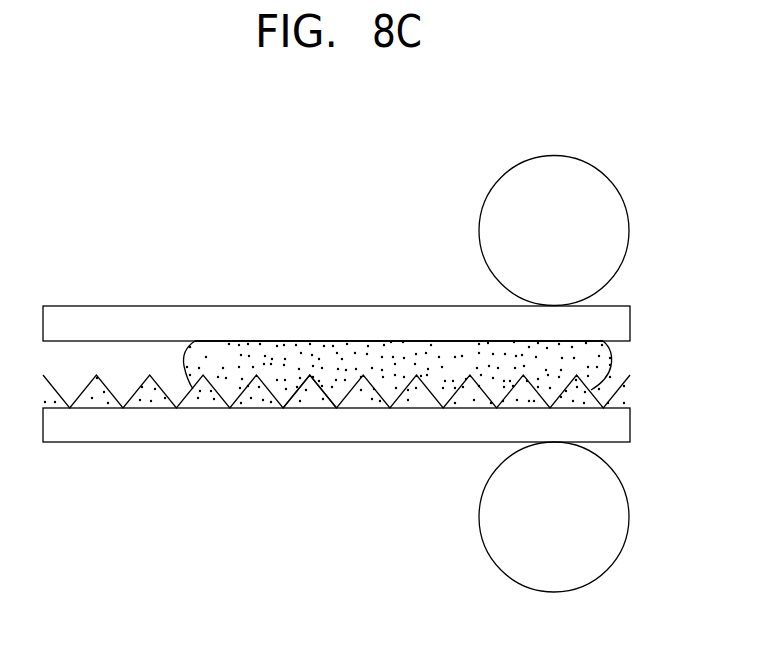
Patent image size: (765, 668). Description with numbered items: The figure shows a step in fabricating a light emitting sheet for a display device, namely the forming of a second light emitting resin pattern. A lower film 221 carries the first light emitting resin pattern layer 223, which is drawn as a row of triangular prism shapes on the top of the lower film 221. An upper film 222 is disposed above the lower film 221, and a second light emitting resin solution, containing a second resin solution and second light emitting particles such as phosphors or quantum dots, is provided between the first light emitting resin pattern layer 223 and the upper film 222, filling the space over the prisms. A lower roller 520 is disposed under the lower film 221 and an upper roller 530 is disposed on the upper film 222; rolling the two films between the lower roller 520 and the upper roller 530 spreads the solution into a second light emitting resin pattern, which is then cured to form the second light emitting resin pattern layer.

The upper roller 530 is at (613, 234).
The lower roller 520 is at (613, 521).
The upper film 222 is at (615, 323).
The lower film 221 is at (615, 425).
The first light emitting resin pattern layer 223 is at (642, 372).